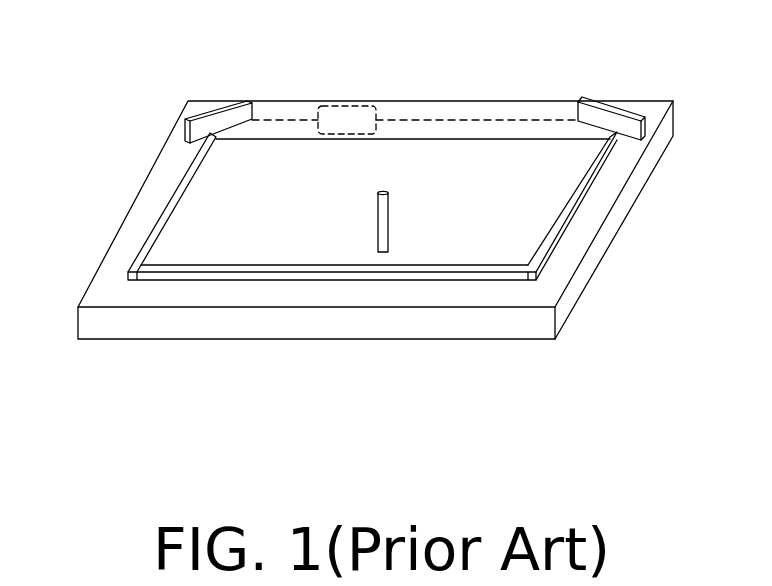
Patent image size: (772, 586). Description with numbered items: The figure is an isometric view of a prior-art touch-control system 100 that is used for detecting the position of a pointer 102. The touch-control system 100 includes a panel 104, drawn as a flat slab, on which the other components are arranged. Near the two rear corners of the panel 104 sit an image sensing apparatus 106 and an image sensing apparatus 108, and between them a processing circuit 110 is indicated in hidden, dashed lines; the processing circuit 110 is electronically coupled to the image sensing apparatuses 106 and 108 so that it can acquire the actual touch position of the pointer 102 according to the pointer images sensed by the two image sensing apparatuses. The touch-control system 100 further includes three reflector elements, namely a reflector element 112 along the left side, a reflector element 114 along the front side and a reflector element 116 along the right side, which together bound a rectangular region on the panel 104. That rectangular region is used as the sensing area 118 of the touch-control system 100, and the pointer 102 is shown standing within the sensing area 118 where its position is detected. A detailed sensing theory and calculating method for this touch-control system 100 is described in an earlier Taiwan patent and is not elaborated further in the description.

The touch-control system 100 is at (658, 392).
The pointer 102 is at (389, 220).
The panel 104 is at (588, 222).
The image sensing apparatus 106 is at (210, 117).
The image sensing apparatus 108 is at (617, 107).
The processing circuit 110 is at (348, 105).
The reflector element 112 is at (175, 193).
The reflector element 114 is at (267, 272).
The reflector element 116 is at (600, 167).
The sensing area 118 is at (483, 250).